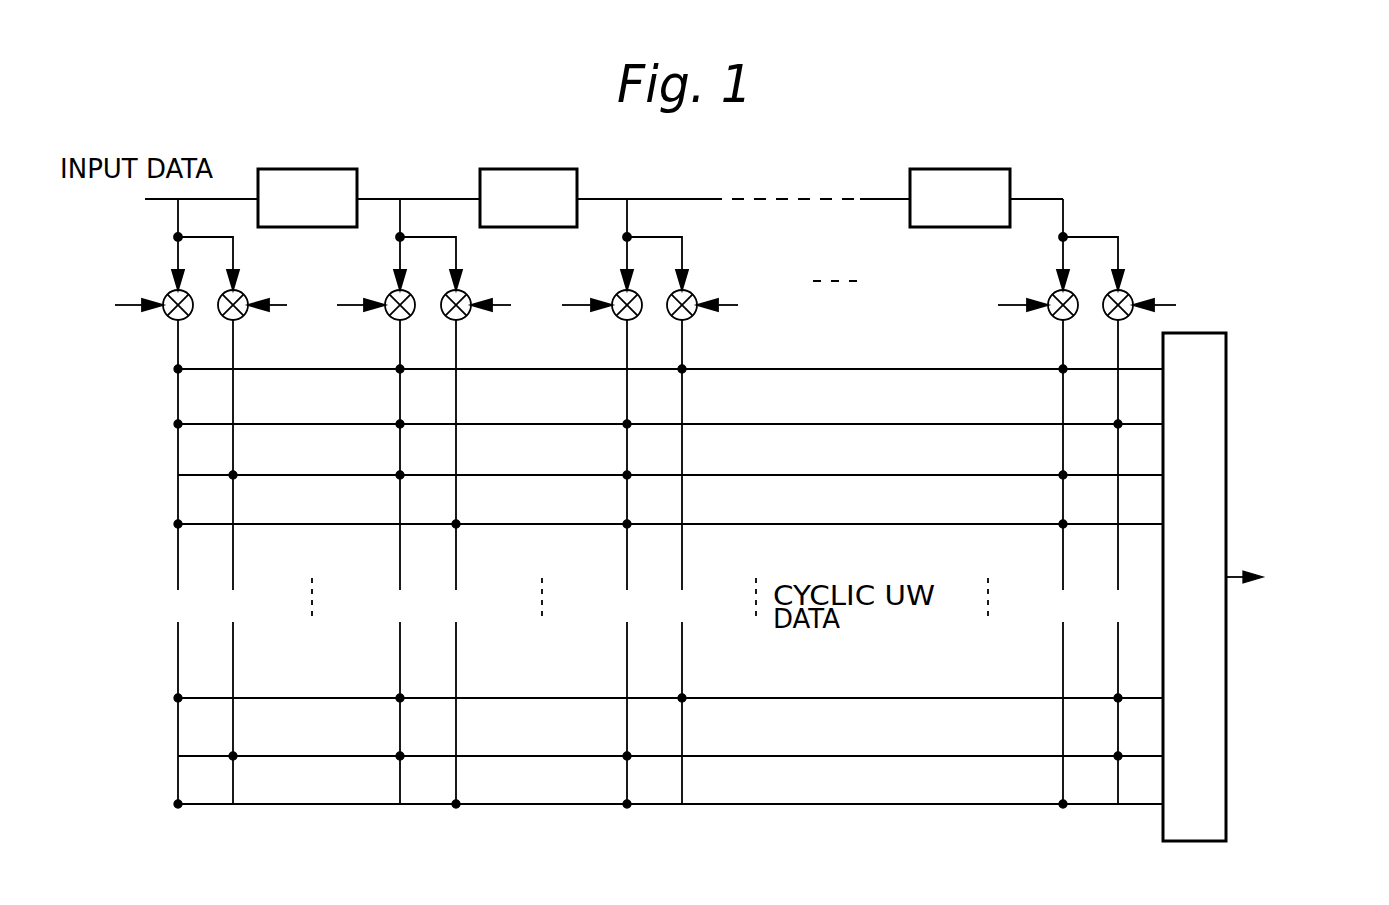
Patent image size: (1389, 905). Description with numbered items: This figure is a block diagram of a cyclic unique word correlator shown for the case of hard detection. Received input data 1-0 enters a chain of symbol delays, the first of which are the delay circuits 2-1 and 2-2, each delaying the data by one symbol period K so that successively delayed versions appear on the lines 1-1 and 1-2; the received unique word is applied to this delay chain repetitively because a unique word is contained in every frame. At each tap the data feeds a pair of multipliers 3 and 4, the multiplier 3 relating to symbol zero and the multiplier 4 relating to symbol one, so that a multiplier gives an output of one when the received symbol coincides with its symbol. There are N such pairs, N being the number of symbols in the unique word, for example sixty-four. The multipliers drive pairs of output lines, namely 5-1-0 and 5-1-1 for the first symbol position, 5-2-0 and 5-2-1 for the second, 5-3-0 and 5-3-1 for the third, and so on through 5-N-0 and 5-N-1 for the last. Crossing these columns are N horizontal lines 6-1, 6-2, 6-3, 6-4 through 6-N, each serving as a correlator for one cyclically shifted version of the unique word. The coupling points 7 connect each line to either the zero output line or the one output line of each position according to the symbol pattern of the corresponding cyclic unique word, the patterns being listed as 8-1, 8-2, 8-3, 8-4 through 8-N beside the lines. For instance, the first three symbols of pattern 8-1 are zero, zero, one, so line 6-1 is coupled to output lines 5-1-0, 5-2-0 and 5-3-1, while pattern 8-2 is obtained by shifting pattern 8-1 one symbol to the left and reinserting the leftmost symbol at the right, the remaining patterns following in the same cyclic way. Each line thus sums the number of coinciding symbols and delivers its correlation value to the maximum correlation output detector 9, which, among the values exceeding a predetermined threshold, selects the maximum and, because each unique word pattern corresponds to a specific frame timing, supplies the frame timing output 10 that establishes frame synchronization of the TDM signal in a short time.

The input data line 1-0 is at (179, 201).
The delayed data line 1-1 is at (418, 180).
The delayed data line 1-2 is at (743, 221).
The symbol delay 2-1 is at (305, 169).
The symbol delay 2-2 is at (527, 169).
The multiplier 3 is at (586, 260).
The multiplier 4 is at (686, 277).
The output line 5-1-0 is at (160, 562).
The output line 5-1-1 is at (237, 562).
The output line 5-2-0 is at (389, 562).
The output line 5-2-1 is at (470, 562).
The output line 5-3-0 is at (617, 562).
The output line 5-3-1 is at (697, 562).
The output line 5-N-0 is at (1053, 562).
The output line 5-N-1 is at (1131, 562).
The line 6-1 is at (670, 354).
The line 6-2 is at (670, 409).
The line 6-3 is at (670, 459).
The line 6-4 is at (670, 509).
The line 6-N is at (670, 787).
The connection node 7 is at (633, 572).
The unique word 8-1 is at (841, 354).
The unique word 8-2 is at (831, 409).
The unique word 8-3 is at (833, 459).
The unique word 8-4 is at (833, 506).
The unique word 8-N is at (856, 786).
The maximum correlation output detector 9 is at (1228, 366).
The frame timing information 10 is at (1236, 572).